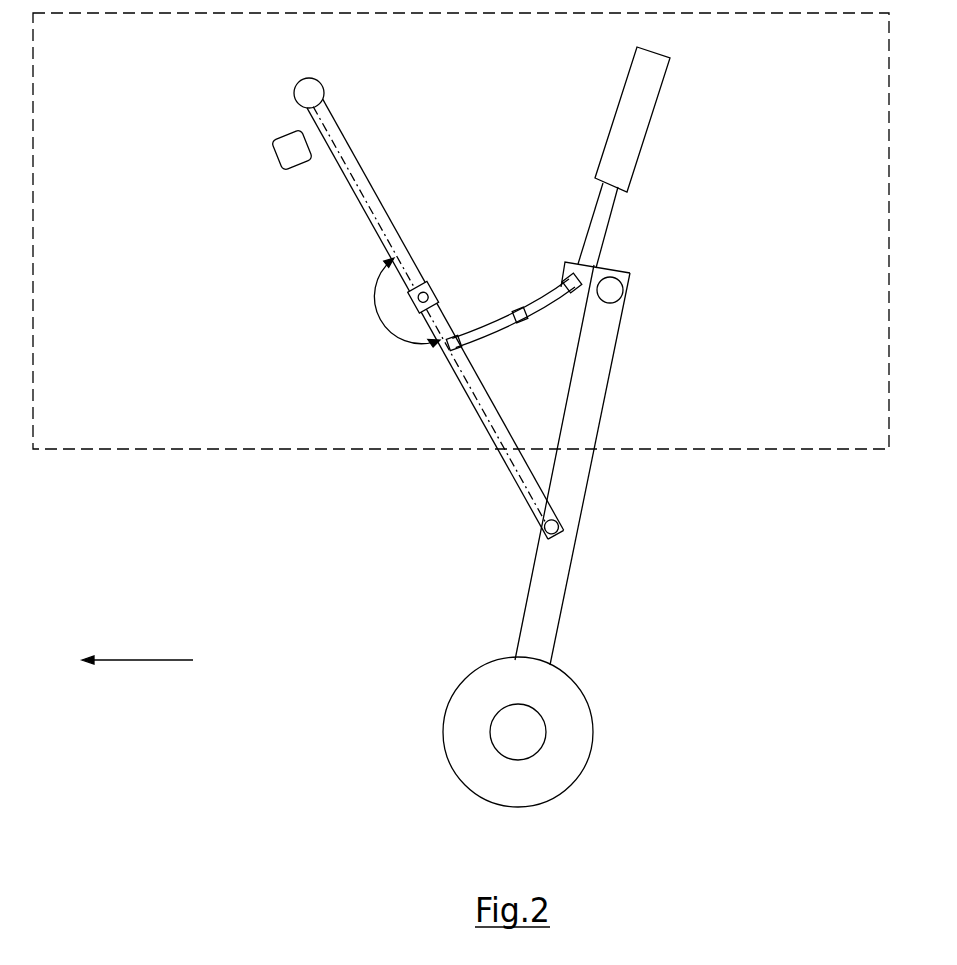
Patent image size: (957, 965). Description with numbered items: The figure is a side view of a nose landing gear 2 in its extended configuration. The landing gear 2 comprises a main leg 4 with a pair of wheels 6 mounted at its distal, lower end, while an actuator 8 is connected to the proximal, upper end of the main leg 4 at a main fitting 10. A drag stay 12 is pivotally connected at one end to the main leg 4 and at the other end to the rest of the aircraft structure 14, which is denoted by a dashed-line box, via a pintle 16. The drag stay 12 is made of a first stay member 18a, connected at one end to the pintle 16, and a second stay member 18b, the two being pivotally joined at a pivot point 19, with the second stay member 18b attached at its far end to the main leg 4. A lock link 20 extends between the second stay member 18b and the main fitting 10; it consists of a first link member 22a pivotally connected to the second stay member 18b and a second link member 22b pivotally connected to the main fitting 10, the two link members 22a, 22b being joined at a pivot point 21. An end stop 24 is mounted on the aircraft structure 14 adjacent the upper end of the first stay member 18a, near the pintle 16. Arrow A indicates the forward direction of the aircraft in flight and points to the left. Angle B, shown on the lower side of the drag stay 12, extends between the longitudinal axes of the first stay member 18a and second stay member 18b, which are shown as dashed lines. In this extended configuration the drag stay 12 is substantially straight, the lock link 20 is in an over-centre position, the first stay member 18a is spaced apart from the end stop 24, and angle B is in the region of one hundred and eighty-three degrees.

The nose landing gear 2 is at (451, 423).
The main leg 4 is at (538, 618).
The wheels 6 is at (462, 720).
The actuator 8 is at (613, 148).
The main fitting 10 is at (588, 278).
The drag stay 12 is at (367, 290).
The aircraft structure 14 is at (96, 71).
The pintle 16 is at (306, 90).
The first stay member 18a is at (366, 195).
The second stay member 18b is at (492, 421).
The pivot point 19 is at (423, 297).
The lock link 20 is at (547, 300).
The pivot point 21 is at (532, 310).
The first link member 22a is at (476, 327).
The second link member 22b is at (533, 303).
The end stop 24 is at (300, 152).
The arrow A is at (137, 637).
The angle B is at (392, 308).